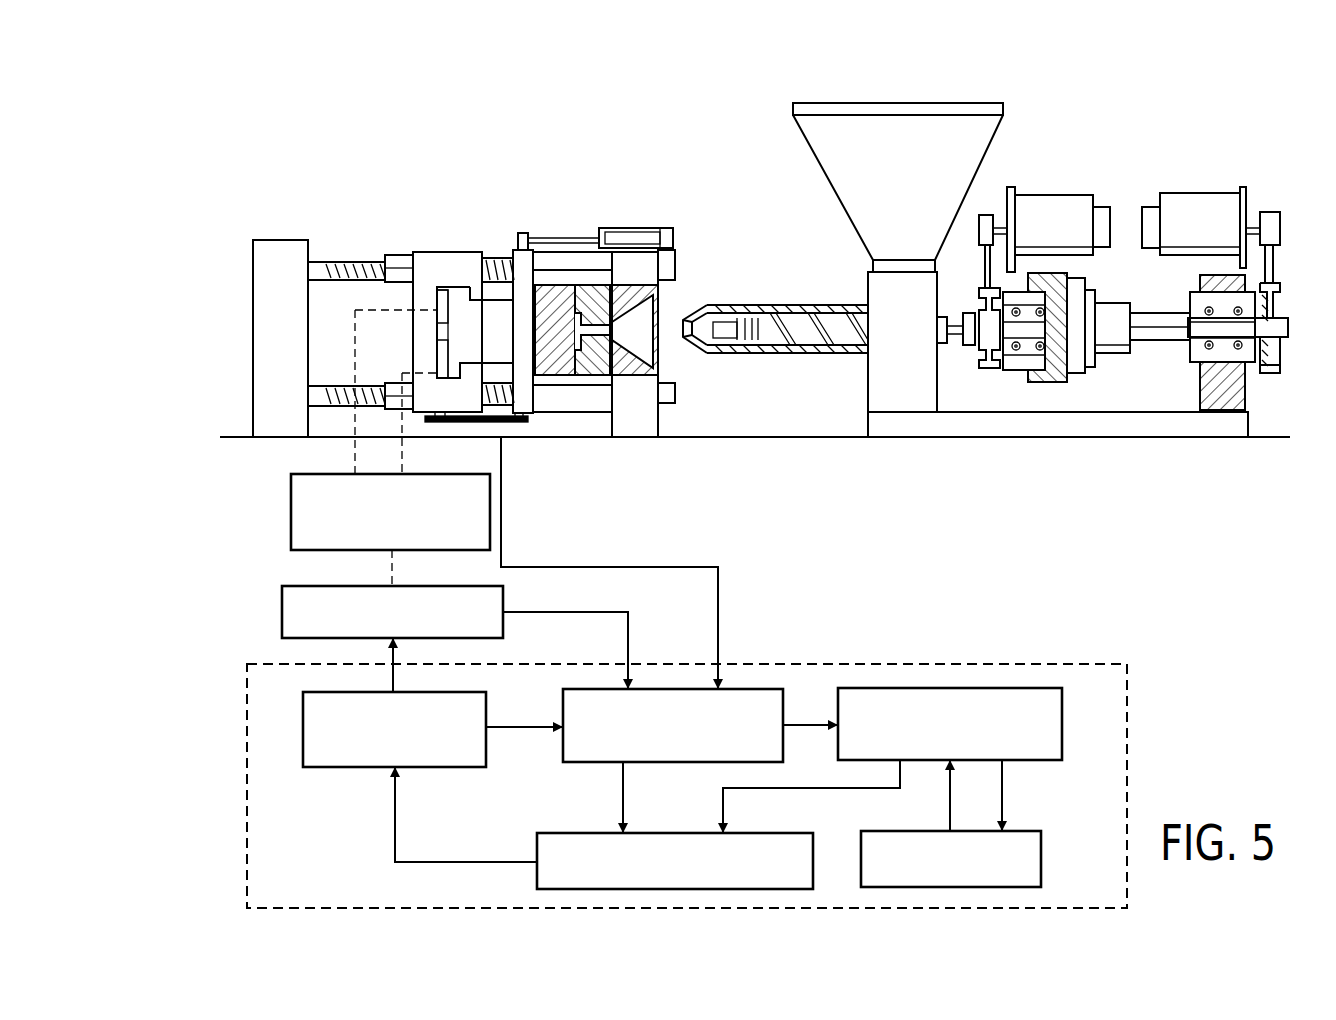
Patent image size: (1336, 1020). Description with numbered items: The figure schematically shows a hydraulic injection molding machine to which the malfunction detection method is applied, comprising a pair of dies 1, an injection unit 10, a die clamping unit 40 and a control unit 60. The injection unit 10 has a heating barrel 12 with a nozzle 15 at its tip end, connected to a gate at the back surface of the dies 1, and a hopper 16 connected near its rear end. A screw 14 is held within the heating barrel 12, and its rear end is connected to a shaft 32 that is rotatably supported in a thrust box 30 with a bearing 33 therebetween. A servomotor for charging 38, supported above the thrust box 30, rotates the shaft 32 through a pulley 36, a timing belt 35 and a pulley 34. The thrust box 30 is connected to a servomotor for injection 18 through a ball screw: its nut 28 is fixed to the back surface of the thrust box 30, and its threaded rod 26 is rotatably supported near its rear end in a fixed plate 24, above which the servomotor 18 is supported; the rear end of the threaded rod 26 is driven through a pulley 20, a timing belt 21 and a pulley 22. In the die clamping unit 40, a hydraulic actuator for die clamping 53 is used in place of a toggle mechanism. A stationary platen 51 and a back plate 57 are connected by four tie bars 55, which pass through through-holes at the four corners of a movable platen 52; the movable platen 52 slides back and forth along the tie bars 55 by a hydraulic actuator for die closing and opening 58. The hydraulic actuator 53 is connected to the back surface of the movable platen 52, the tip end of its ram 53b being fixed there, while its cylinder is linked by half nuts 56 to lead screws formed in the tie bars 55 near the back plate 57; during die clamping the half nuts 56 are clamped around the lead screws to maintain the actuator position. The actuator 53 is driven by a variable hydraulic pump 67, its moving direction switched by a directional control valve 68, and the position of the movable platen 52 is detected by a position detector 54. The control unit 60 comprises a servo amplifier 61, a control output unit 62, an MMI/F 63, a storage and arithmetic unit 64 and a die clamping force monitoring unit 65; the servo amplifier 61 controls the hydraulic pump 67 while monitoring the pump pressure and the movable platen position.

The pair of dies 1 is at (555, 380).
The injection unit 10 is at (747, 128).
The heating barrel 12 is at (785, 305).
The screw 14 is at (795, 337).
The nozzle 15 is at (688, 340).
The hopper 16 is at (907, 103).
The servomotor for injection 18 is at (1200, 200).
The pulley 20 is at (1270, 212).
The timing belt 21 is at (1275, 265).
The pulley 22 is at (1278, 355).
The fixed plate 24 is at (1240, 393).
The threaded rod 26 is at (1158, 340).
The nut 28 is at (1108, 315).
The thrust box 30 is at (1048, 368).
The shaft 32 is at (968, 345).
The bearing 33 is at (1020, 372).
The pulley 34 is at (990, 370).
The timing belt 35 is at (983, 255).
The pulley 36 is at (990, 215).
The servomotor for charging 38 is at (1065, 200).
The die clamping unit 40 is at (483, 128).
The stationary platen 51 is at (638, 427).
The movable platen 52 is at (514, 262).
The hydraulic actuator for die clamping 53 is at (441, 262).
The ram 53b is at (492, 308).
The position detector 54 is at (506, 425).
The tie bars 55 is at (575, 265).
The half nuts 56 is at (396, 256).
The back plate 57 is at (281, 240).
The hydraulic actuator for die closing and opening 58 is at (633, 228).
The control unit 60 is at (1142, 742).
The servo amplifier 61 is at (345, 768).
The control output unit 62 is at (673, 833).
The MMI/F 63 is at (1041, 858).
The storage and arithmetic unit 64 is at (1062, 722).
The die clamping force monitoring unit 65 is at (587, 763).
The variable hydraulic pump 67 is at (282, 612).
The directional control valve 68 is at (291, 507).